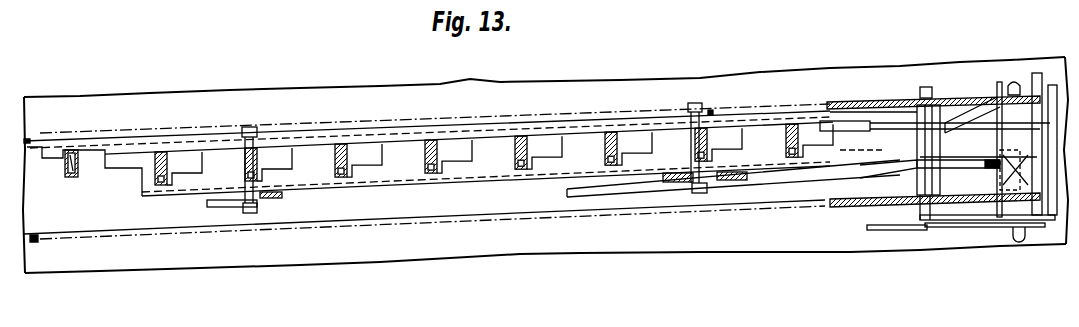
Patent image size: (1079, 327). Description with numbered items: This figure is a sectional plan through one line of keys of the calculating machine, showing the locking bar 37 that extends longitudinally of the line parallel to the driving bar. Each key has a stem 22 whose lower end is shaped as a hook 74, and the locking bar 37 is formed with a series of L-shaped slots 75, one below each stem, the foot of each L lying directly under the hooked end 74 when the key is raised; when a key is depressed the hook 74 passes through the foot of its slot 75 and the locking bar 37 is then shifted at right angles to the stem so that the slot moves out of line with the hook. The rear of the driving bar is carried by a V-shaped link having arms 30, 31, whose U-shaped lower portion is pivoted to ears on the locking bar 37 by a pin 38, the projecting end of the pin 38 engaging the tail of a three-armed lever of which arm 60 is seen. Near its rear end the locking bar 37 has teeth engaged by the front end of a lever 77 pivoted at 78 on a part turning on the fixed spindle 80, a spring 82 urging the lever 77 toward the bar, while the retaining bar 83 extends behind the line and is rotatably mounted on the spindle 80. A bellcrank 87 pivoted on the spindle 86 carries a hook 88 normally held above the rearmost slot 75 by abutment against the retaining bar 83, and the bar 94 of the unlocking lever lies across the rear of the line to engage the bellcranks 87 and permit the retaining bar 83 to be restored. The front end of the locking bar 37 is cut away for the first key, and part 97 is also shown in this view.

The key stem 22 is at (337, 150).
The arm of V-shaped link 30 is at (737, 172).
The arm of V-shaped link 31 is at (682, 172).
The locking bar 37 is at (313, 165).
The pin 38 is at (697, 194).
The arm of three-armed lever 60 is at (805, 170).
The hook 74 is at (248, 182).
The slots 75 is at (652, 140).
The lever 77 is at (873, 178).
The pivot 78 is at (913, 147).
The fixed spindle 80 is at (933, 220).
The spring 82 is at (992, 168).
The retaining bar 83 is at (1000, 153).
The spindle 86 is at (1014, 82).
The bellcrank 87 is at (937, 126).
The hook 88 is at (846, 103).
The bar 94 is at (935, 128).
The end block 97 is at (74, 177).